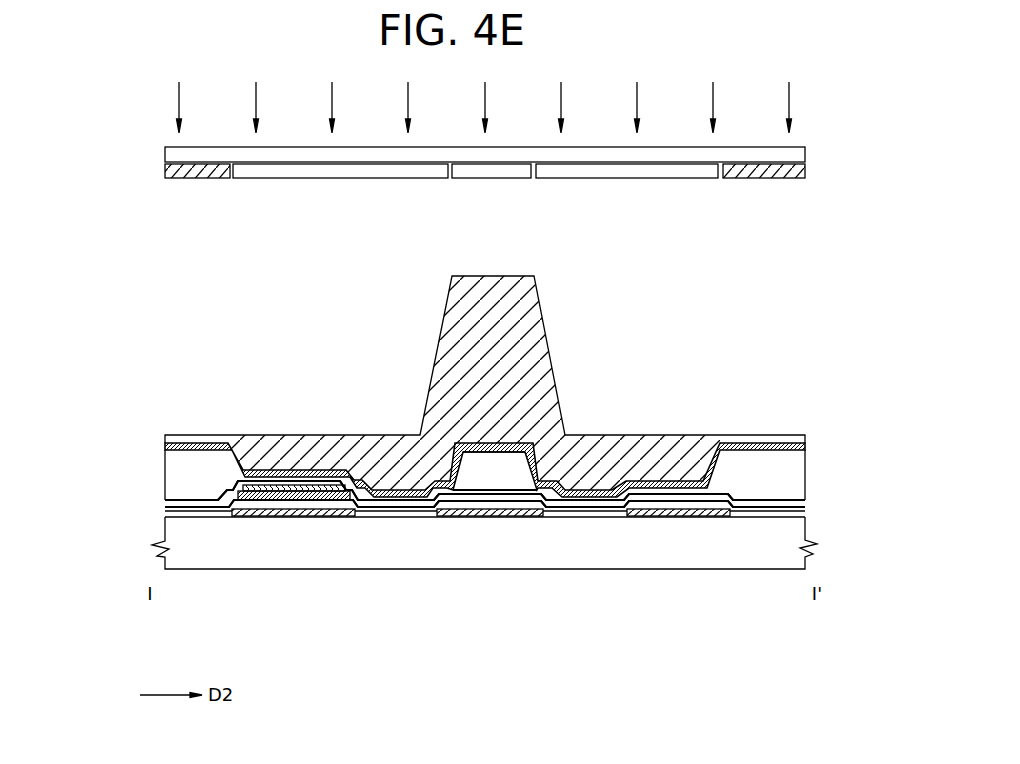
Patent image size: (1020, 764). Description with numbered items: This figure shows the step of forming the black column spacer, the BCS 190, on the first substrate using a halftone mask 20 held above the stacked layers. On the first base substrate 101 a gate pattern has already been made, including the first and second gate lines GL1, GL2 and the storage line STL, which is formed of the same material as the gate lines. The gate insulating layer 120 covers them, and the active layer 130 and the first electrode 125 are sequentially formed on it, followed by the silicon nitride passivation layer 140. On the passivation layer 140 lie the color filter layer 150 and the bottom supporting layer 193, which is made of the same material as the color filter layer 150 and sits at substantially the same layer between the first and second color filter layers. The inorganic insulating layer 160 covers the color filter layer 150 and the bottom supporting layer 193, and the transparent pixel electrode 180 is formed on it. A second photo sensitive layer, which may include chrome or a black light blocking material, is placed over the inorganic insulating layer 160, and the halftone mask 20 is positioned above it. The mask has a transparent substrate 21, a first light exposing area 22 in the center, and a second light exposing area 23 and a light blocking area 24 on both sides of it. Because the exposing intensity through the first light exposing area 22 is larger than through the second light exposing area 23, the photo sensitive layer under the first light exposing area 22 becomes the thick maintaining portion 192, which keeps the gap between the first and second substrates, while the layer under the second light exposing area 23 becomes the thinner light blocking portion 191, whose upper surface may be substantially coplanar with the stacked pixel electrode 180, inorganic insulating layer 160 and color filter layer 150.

The halftone mask 20 is at (92, 135).
The transparent substrate 21 is at (168, 157).
The first light exposing area 22 is at (462, 171).
The second light exposing area 23 is at (270, 173).
The light blocking area 24 is at (165, 168).
The first base substrate 101 is at (165, 561).
The gate insulating layer 120 is at (165, 512).
The first electrode 125 is at (314, 491).
The active layer 130 is at (246, 500).
The passivation layer 140 is at (165, 502).
The color filter layer 150 is at (167, 477).
The inorganic insulating layer 160 is at (165, 447).
The pixel electrode 180 is at (447, 473).
The BCS 190 is at (570, 473).
The light blocking portion 191 is at (627, 447).
The maintaining portion 192 is at (500, 350).
The bottom supporting layer 193 is at (473, 470).
The storage line STL is at (293, 517).
The first gate line GL1 is at (515, 517).
The second gate line GL2 is at (682, 517).